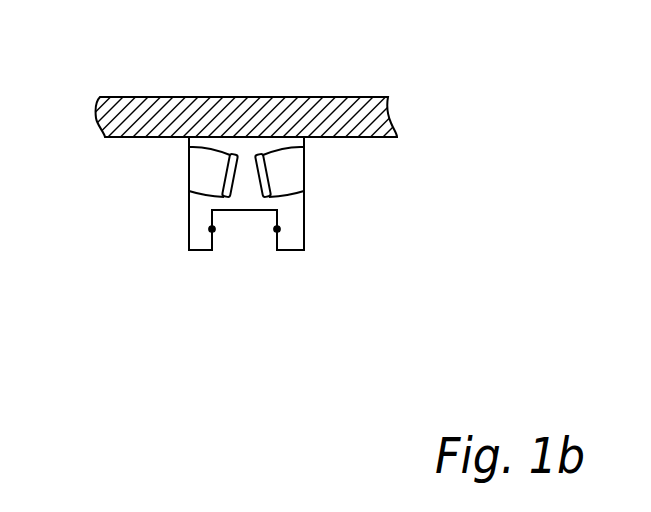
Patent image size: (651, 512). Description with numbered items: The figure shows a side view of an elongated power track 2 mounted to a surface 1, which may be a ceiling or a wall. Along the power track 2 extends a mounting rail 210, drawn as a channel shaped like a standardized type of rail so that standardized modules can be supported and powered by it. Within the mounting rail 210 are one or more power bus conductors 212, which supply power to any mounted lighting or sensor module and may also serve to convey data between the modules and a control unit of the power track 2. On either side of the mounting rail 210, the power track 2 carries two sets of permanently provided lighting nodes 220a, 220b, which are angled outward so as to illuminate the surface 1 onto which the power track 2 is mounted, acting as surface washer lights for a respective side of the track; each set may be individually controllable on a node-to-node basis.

The surface 1 is at (353, 97).
The power track 2 is at (189, 227).
The mounting rail 210 is at (254, 237).
The power bus conductor 212 is at (213, 229).
The lighting node 220a is at (265, 172).
The lighting node 220b is at (228, 170).